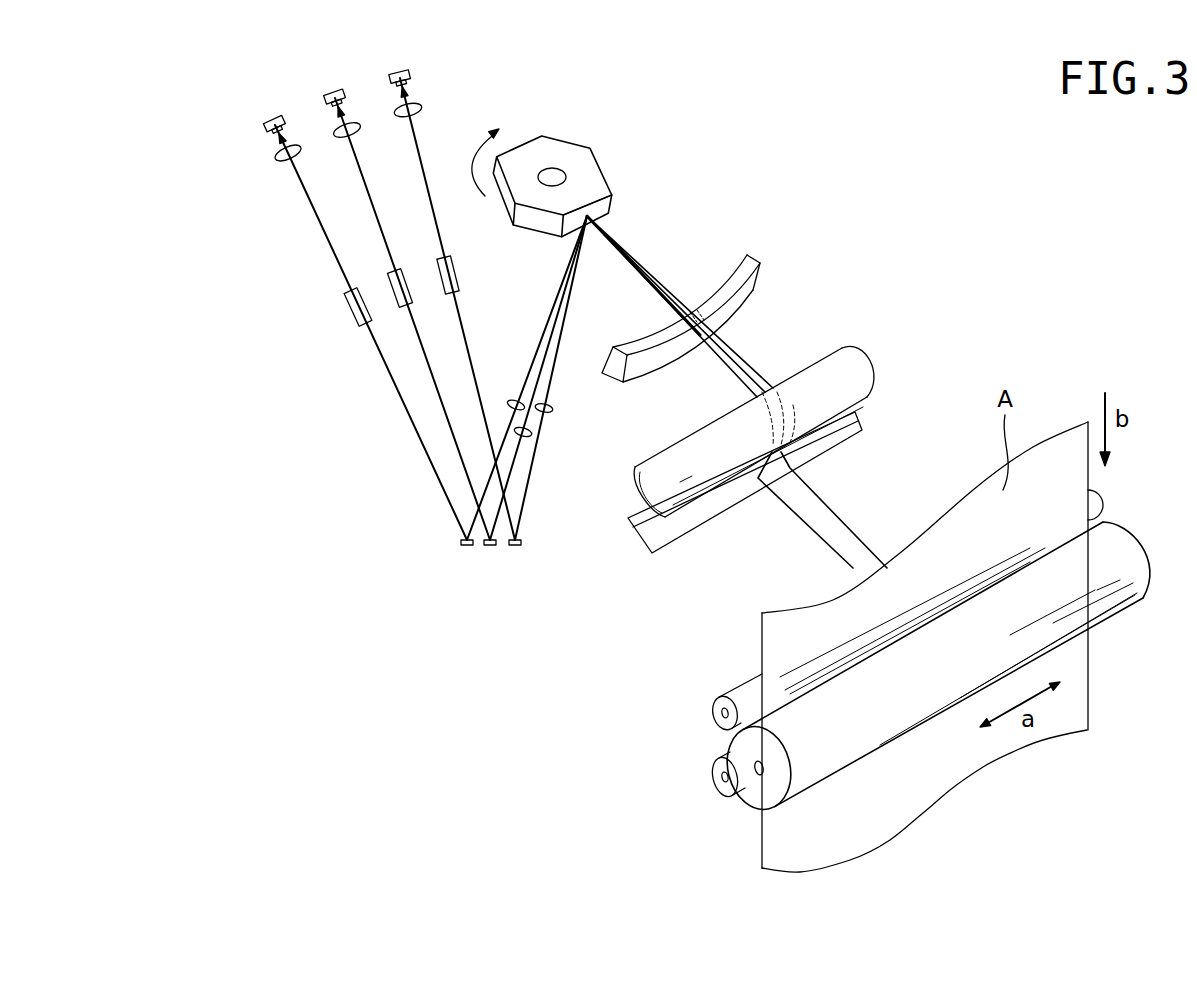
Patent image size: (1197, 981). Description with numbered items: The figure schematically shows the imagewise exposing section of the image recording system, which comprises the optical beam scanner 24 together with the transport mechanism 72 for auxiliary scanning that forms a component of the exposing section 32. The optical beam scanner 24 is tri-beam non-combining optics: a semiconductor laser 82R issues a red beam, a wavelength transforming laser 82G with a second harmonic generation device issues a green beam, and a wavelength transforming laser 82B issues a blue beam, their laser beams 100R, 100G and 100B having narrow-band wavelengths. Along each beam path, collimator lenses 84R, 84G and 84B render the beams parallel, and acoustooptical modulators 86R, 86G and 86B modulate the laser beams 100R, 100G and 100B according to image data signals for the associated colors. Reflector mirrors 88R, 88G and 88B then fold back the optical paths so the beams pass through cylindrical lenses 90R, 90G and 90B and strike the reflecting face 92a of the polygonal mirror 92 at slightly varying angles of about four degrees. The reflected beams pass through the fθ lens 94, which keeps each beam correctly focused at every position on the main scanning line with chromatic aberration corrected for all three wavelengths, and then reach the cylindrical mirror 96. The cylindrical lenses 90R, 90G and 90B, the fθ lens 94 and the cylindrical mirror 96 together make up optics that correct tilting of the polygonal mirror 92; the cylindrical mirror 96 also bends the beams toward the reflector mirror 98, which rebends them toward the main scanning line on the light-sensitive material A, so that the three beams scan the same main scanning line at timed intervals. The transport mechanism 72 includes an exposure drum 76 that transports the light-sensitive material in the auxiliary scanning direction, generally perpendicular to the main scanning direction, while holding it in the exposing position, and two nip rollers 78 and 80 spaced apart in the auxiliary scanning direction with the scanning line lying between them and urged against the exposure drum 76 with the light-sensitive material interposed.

The optical beam scanner 24 is at (751, 113).
The exposing section 32 is at (1070, 358).
The transport mechanism for auxiliary scanning 72 is at (643, 800).
The exposure drum 76 is at (757, 793).
The nip roller 78 is at (714, 713).
The nip roller 80 is at (713, 777).
The wavelength transforming laser (B-SHG) 82B is at (264, 118).
The wavelength transforming laser (G-SHG) 82G is at (333, 91).
The semiconductor laser (LD) 82R is at (411, 72).
The collimator lens 84B is at (276, 155).
The collimator lens 84G is at (335, 128).
The collimator lens 84R is at (421, 108).
The acoustooptical modulator (AOM) 86B is at (341, 293).
The acoustooptical modulator (AOM) 86G is at (411, 303).
The acoustooptical modulator (AOM) 86R is at (462, 276).
The reflector mirror 88B is at (460, 542).
The reflector mirror 88G is at (490, 548).
The reflector mirror 88R is at (517, 548).
The cylindrical lens 90B is at (515, 400).
The cylindrical lens 90G is at (526, 440).
The cylindrical lens 90R is at (553, 408).
The polygonal mirror 92 is at (541, 157).
The reflecting face 92a is at (613, 204).
The fθ lens 94 is at (751, 255).
The cylindrical mirror 96 is at (855, 352).
The reflector mirror 98 is at (856, 425).
The laser beam 100B is at (425, 452).
The laser beam 100G is at (440, 395).
The laser beam 100R is at (466, 344).